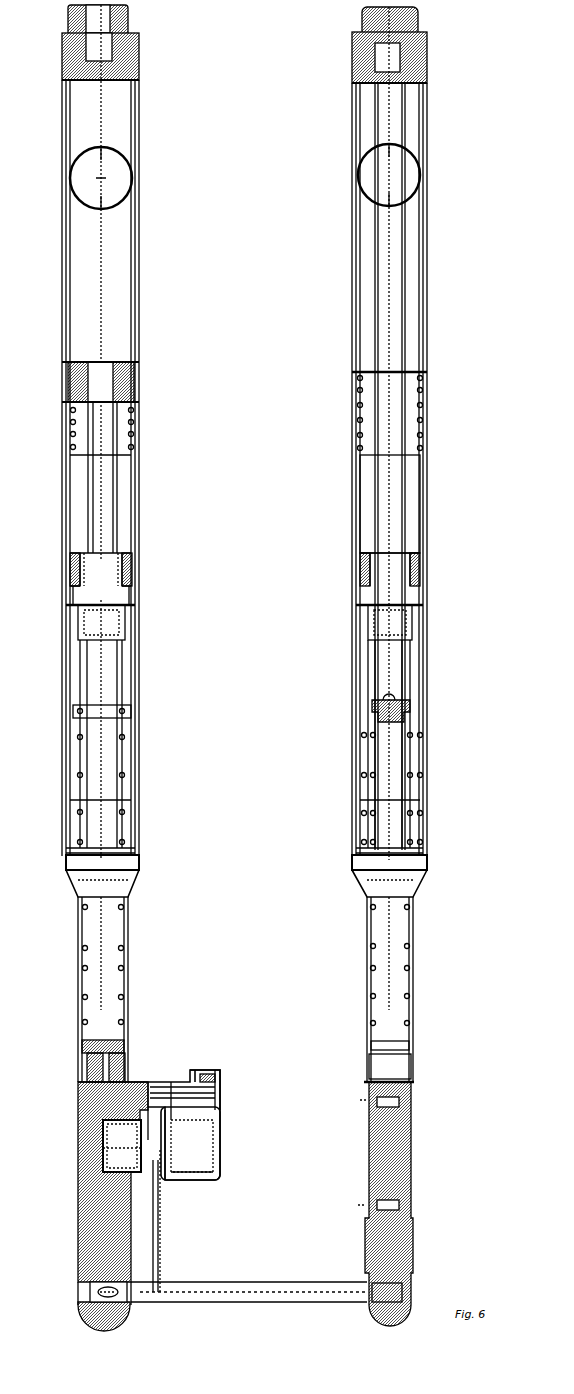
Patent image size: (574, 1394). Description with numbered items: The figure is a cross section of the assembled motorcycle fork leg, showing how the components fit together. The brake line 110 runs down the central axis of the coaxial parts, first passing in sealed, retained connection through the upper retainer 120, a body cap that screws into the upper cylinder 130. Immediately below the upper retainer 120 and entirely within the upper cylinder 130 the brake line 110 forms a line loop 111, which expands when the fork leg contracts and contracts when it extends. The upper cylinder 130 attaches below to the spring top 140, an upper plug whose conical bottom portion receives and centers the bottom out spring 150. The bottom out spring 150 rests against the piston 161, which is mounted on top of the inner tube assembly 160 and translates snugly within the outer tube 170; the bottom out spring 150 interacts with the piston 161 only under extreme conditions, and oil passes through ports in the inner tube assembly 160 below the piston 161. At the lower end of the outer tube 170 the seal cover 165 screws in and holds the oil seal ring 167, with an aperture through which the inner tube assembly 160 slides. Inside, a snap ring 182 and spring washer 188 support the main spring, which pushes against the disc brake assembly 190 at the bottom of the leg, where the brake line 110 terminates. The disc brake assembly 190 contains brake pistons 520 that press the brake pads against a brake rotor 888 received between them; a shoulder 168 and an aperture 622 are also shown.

The brake line 110 is at (100, 120).
The line loop 111 is at (128, 164).
The upper retainer 120 is at (352, 57).
The upper cylinder 130 is at (140, 280).
The spring top 140 is at (70, 373).
The bottom out spring 150 is at (118, 470).
The inner tube assembly 160 is at (130, 675).
The piston 161 is at (140, 568).
The seal cover 165 is at (66, 878).
The oil seal ring 167 is at (140, 840).
The shoulder 168 is at (427, 852).
The outer tube 170 is at (140, 208).
The snap ring 182 is at (140, 717).
The spring washer 188 is at (130, 950).
The disc brake assembly 190 is at (78, 1103).
The brake piston 520 is at (90, 1170).
The fastener 622 is at (222, 1092).
The brake rotor 888 is at (160, 1230).